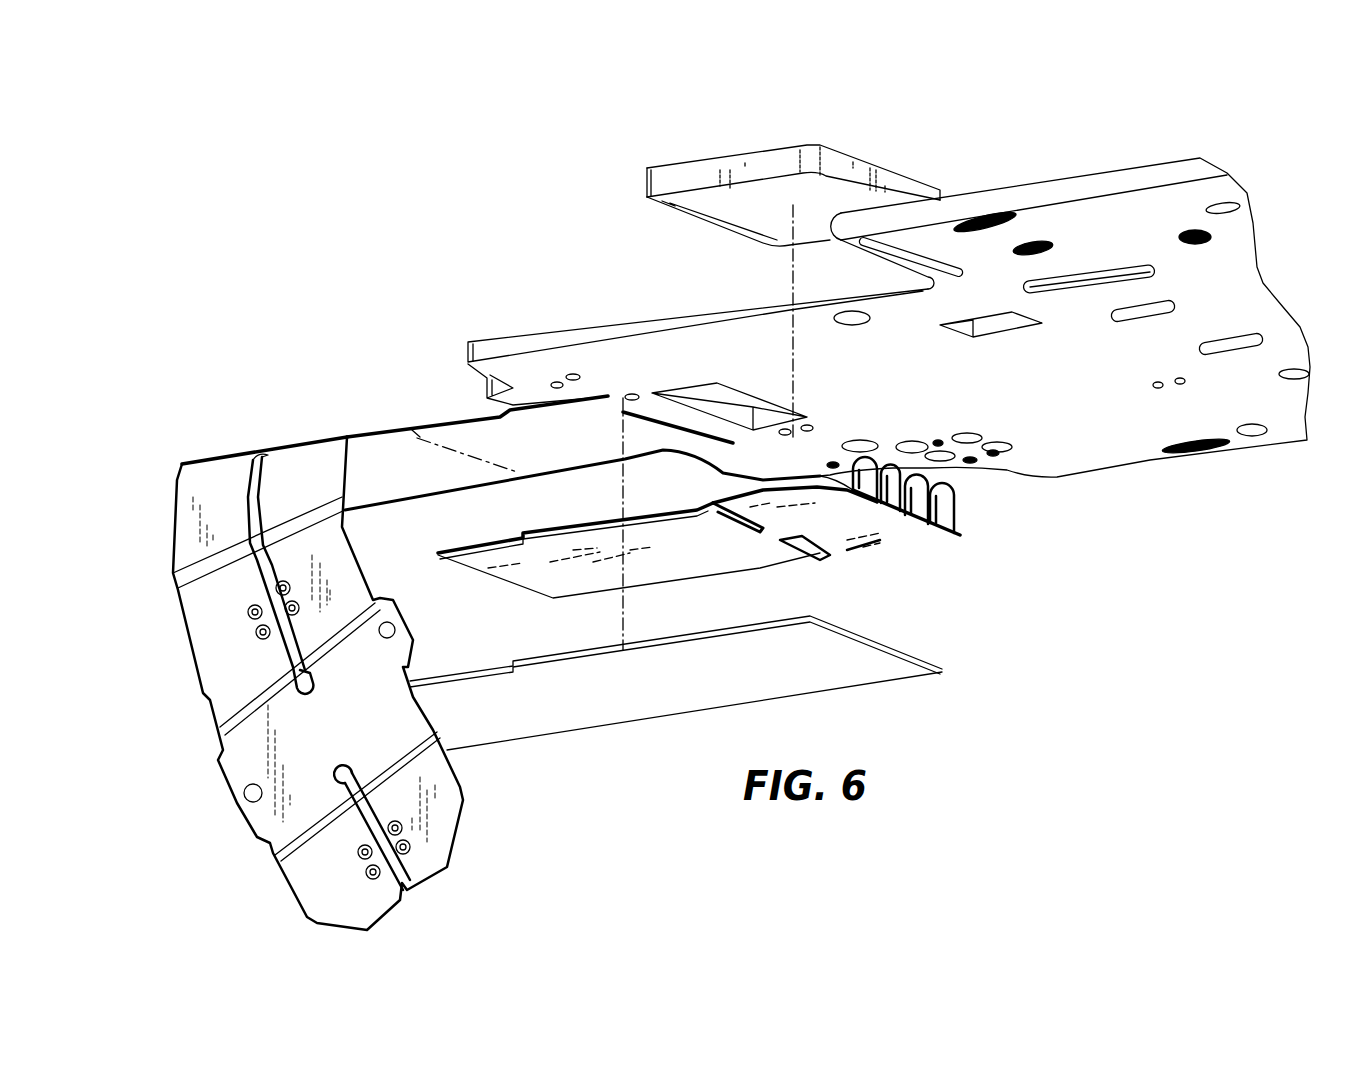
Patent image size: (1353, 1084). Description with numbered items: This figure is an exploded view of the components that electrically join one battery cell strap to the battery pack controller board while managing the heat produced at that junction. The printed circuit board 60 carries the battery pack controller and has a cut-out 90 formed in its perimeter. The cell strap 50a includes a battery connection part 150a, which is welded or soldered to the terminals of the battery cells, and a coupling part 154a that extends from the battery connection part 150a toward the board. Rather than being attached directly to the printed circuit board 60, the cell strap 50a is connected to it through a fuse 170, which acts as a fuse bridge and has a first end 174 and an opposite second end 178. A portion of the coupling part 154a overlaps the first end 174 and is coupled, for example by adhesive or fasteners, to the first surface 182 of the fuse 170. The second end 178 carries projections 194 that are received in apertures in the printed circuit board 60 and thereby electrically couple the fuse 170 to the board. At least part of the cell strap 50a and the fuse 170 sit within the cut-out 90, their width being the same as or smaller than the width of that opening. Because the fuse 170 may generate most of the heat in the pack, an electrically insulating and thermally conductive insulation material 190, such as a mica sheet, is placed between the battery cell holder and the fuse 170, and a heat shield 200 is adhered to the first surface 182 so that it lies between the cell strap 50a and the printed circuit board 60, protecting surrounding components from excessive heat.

The cell strap 50a is at (232, 499).
The printed circuit board 60 is at (1078, 185).
The cut-out 90 is at (615, 330).
The battery connection part 150a is at (237, 673).
The coupling part 154a is at (447, 420).
The fuse 170 is at (790, 567).
The first end 174 is at (500, 583).
The second end 178 is at (917, 493).
The first surface 182 is at (819, 477).
The insulation material 190 is at (655, 688).
The projections 194 is at (947, 497).
The heat shield 200 is at (700, 178).